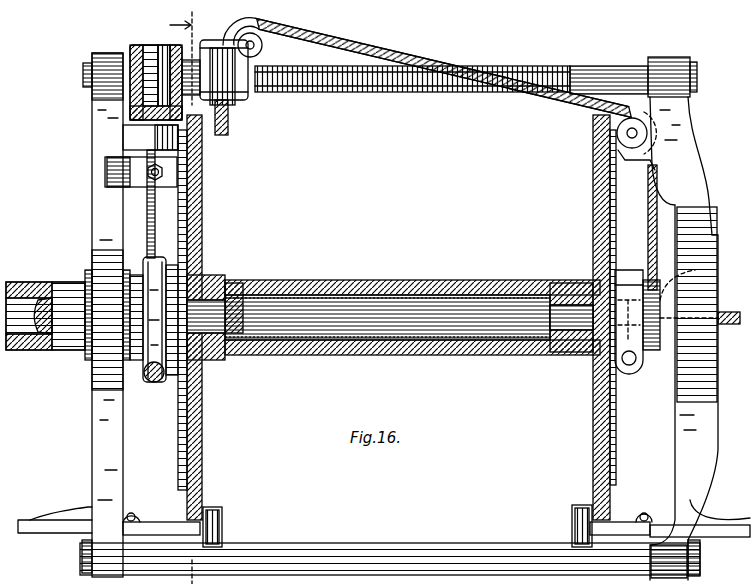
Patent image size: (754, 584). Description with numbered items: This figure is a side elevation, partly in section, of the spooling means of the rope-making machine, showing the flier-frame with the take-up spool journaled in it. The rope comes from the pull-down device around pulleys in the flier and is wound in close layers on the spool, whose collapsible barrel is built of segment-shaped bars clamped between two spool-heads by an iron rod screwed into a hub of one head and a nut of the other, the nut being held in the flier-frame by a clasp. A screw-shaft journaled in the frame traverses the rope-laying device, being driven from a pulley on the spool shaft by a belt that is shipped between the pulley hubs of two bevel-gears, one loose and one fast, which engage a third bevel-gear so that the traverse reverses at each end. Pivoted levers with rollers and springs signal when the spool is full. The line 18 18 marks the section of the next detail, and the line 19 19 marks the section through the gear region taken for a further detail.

The section line 19 is at (187, 59).
The section line 18 is at (197, 572).